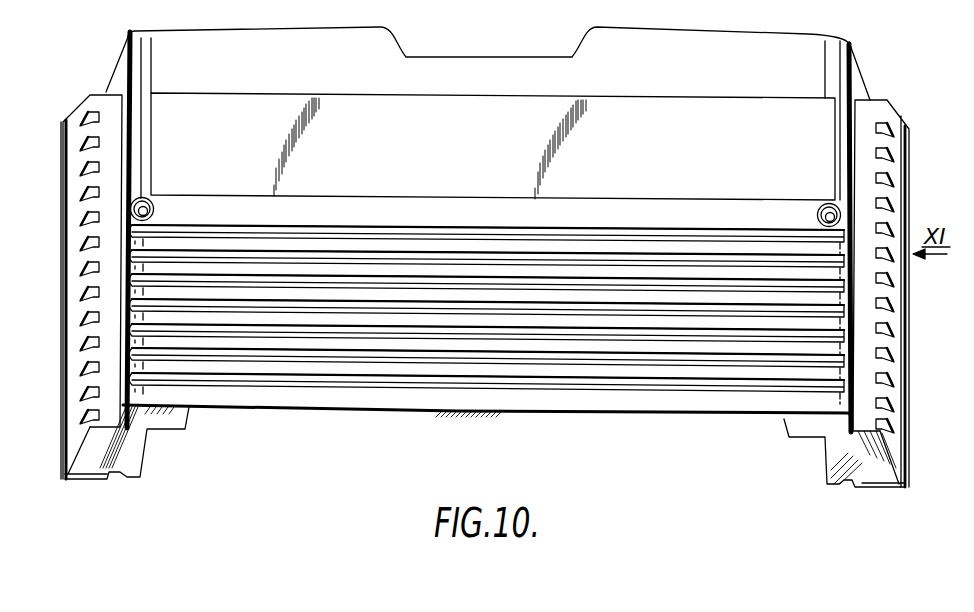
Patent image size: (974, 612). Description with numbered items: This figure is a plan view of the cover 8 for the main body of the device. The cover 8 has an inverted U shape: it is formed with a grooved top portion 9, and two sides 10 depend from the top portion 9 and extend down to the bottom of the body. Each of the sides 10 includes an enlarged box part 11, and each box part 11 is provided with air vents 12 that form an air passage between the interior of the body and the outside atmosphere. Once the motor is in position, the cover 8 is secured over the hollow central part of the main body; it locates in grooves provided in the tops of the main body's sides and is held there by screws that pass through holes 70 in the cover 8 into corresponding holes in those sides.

The cover 8 is at (383, 422).
The grooved top portion 9 is at (503, 333).
The sides 10 is at (111, 81).
The enlarged box part 11 is at (96, 406).
The air vents 12 is at (86, 222).
The holes 70 is at (143, 192).